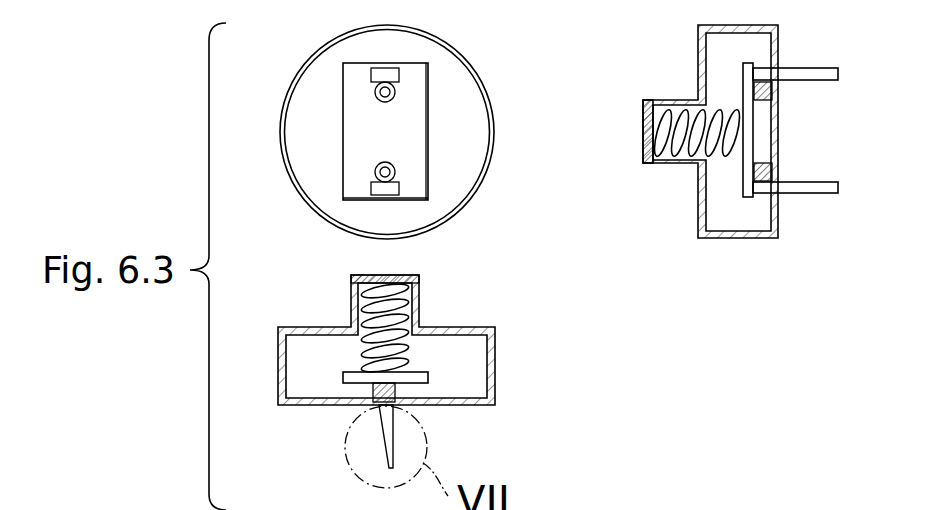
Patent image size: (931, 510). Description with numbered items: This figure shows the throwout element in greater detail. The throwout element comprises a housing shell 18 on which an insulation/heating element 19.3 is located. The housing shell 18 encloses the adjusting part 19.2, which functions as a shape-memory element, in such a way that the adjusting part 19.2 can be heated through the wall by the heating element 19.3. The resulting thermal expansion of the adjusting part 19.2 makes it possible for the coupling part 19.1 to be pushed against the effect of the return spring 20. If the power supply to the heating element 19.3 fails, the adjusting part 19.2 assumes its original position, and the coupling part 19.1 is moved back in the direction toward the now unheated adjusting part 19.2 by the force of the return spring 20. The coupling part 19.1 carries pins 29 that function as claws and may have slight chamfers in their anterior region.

The housing shell 18 is at (463, 57).
The coupling part 19.1 is at (417, 163).
The adjusting part 19.2 is at (672, 167).
The insulation/heating element 19.3 is at (645, 98).
The return spring 20 is at (373, 91).
The pins 29 is at (384, 440).